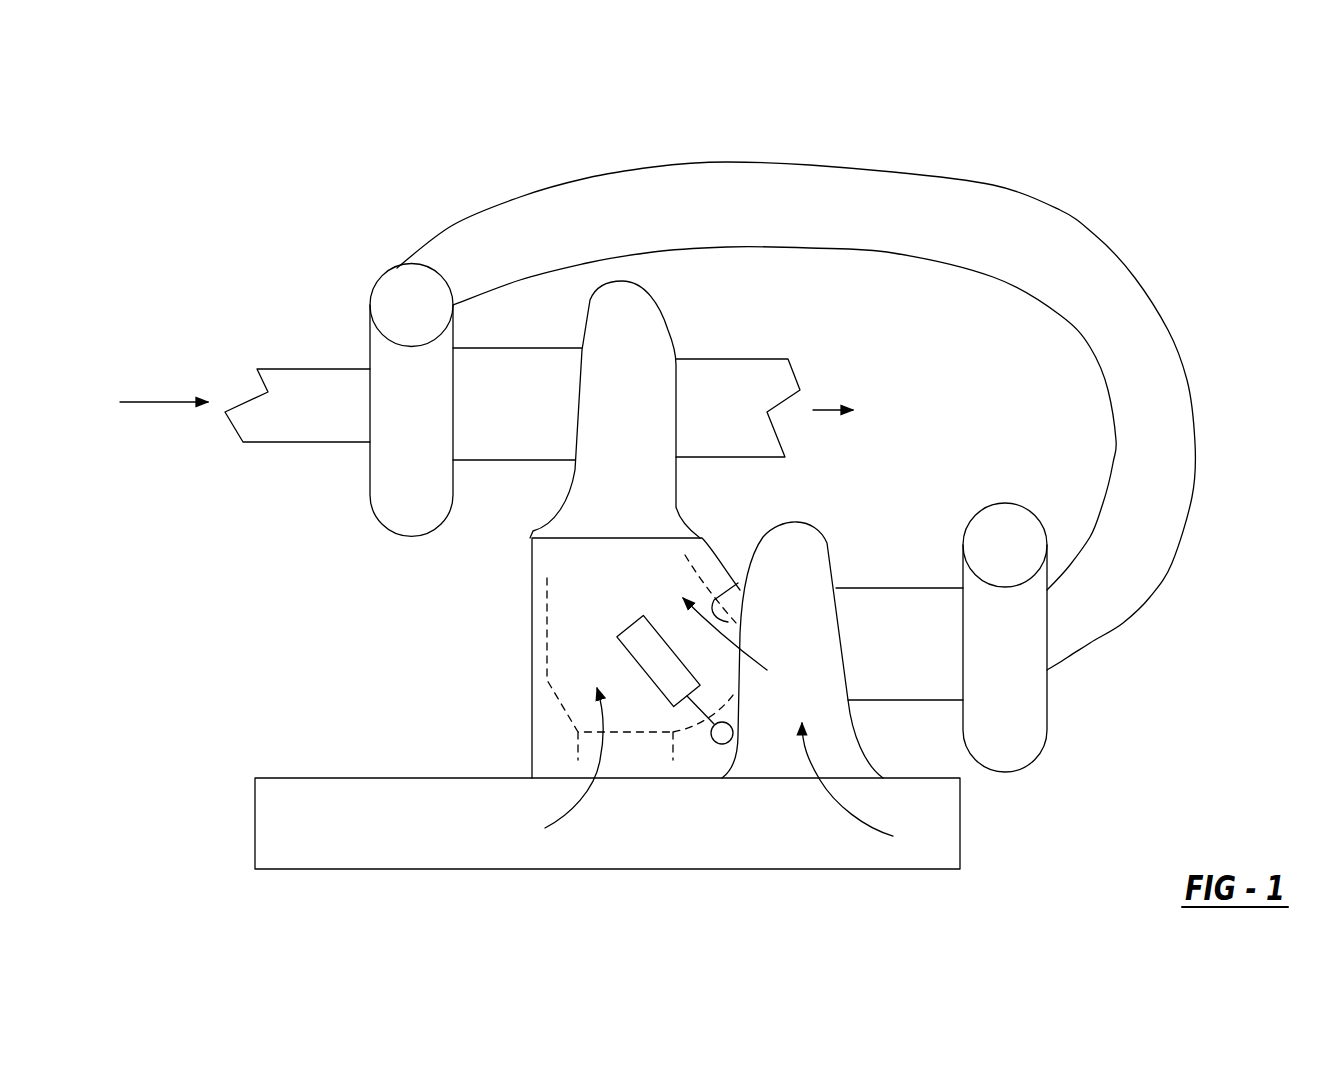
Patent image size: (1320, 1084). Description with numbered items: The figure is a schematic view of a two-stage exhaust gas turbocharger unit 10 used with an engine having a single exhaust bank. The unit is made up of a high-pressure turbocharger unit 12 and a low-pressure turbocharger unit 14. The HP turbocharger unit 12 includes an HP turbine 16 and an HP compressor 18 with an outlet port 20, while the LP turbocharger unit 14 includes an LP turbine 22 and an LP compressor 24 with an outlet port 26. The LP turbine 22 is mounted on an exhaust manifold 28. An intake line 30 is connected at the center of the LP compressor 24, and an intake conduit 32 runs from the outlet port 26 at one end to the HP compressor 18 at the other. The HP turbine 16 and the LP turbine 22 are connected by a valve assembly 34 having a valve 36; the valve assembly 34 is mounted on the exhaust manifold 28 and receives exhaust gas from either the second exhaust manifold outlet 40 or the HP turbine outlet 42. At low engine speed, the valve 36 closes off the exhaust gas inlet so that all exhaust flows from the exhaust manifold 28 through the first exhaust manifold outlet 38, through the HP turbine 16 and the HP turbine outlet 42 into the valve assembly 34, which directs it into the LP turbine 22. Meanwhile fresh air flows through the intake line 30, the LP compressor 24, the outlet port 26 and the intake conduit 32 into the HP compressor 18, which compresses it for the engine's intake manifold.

The two-stage exhaust gas turbocharger unit 10 is at (403, 187).
The high-pressure turbocharger unit 12 is at (1017, 820).
The low-pressure turbocharger unit 14 is at (480, 527).
The HP turbine 16 is at (800, 582).
The HP compressor 18 is at (1030, 735).
The outlet port 20 is at (1032, 542).
The LP turbine 22 is at (657, 360).
The LP compressor 24 is at (410, 373).
The outlet port 26 is at (400, 283).
The exhaust manifold 28 is at (417, 827).
The intake line 30 is at (282, 425).
The intake conduit 32 is at (837, 177).
The valve assembly 34 is at (497, 623).
The valve 36 is at (626, 618).
The first exhaust manifold outlet 38 is at (778, 782).
The second exhaust manifold outlet 40 is at (637, 782).
The HP turbine outlet 42 is at (738, 583).